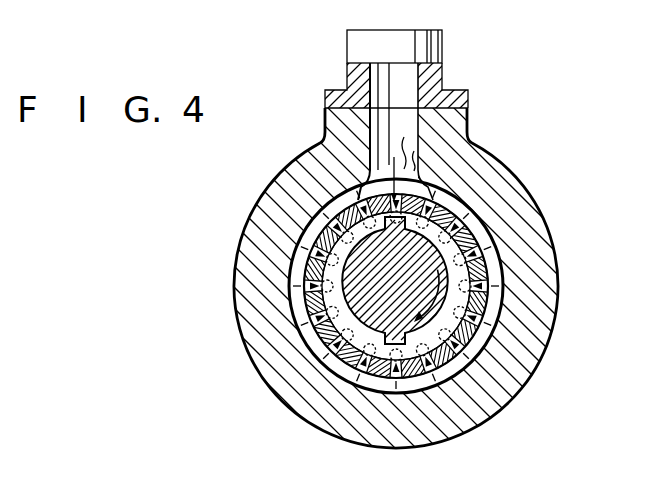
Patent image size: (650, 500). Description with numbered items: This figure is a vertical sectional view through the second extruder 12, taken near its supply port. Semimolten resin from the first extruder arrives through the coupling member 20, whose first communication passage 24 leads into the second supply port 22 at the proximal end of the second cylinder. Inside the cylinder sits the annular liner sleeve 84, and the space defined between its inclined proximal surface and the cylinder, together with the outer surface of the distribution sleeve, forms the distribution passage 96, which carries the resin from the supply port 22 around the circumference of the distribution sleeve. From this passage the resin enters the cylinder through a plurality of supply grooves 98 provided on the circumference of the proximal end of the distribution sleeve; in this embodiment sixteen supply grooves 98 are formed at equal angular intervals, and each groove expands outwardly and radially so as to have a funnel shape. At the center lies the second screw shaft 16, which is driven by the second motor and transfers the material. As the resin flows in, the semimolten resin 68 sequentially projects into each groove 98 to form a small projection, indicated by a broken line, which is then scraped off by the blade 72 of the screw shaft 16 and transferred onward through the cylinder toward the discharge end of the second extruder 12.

The second extruder 12 is at (560, 289).
The second screw shaft 16 is at (427, 374).
The coupling member 20 is at (443, 41).
The second supply port 22 is at (380, 133).
The first communication passage 24 is at (385, 85).
The semimolten resin 68 is at (481, 330).
The blade 72 is at (414, 222).
The annular liner sleeve 84 is at (405, 158).
The distribution passage 96 is at (293, 262).
The supply grooves 98 is at (314, 325).